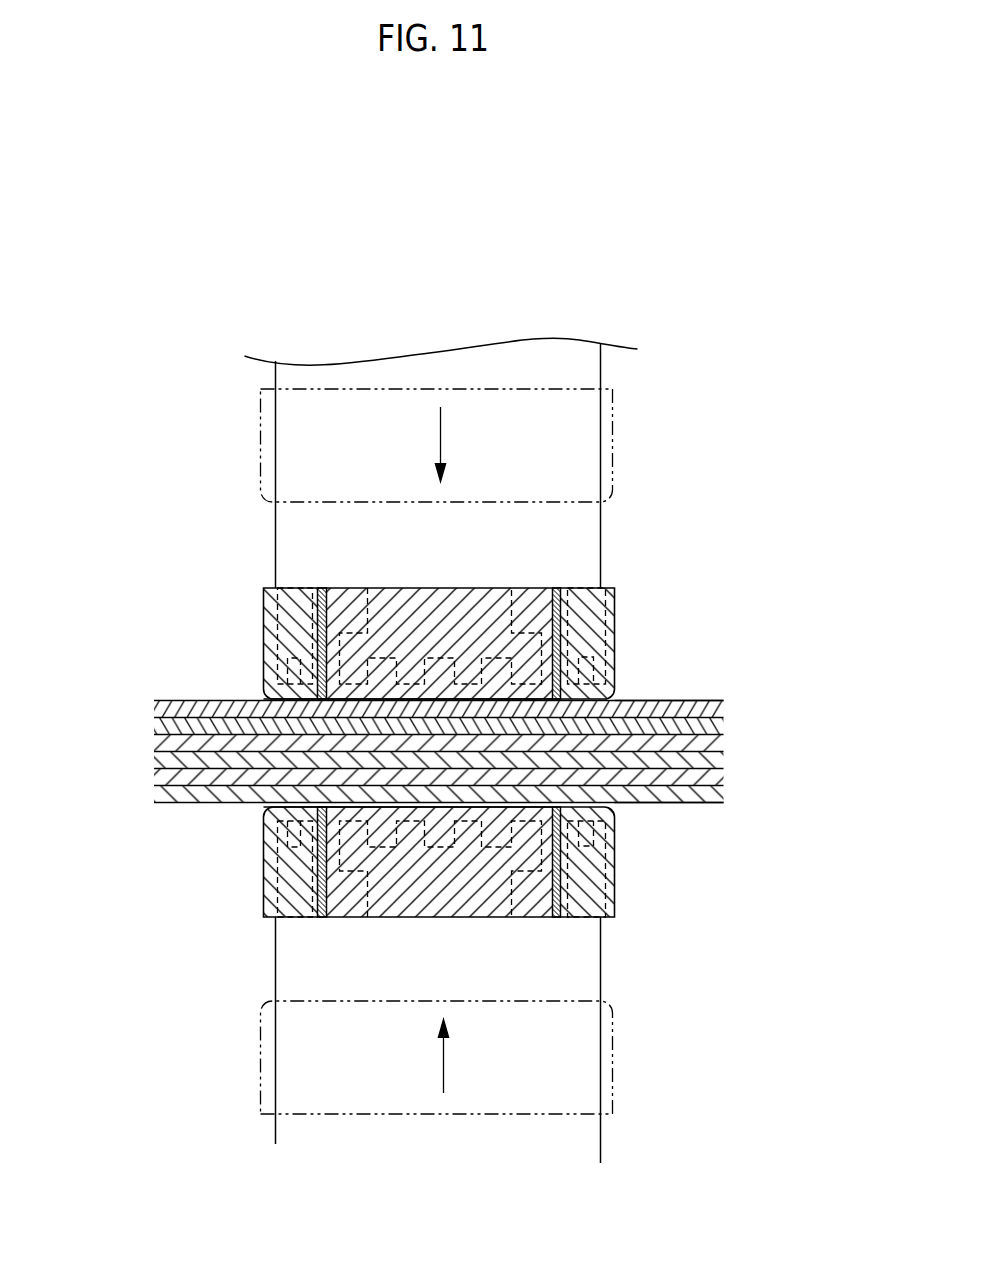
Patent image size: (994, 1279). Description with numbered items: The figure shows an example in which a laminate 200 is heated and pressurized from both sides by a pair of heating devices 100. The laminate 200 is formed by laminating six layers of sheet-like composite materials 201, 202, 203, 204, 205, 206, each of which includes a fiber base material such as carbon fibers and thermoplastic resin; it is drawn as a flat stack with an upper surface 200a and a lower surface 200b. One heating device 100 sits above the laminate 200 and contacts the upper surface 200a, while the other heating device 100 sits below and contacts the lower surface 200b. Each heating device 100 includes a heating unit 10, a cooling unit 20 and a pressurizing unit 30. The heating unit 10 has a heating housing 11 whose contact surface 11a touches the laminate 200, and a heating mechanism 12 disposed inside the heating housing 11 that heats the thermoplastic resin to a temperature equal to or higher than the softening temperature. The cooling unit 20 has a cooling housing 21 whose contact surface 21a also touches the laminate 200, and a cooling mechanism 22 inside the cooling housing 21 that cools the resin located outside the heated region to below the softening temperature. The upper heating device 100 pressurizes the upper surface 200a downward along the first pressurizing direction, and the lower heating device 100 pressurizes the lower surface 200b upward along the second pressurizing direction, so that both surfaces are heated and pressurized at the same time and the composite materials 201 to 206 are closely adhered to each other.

The heating device 100 is at (424, 748).
The heating unit 10 is at (440, 755).
The heating housing 11 is at (458, 603).
The contact surface 11a is at (403, 700).
The heating mechanism 12 is at (540, 632).
The cooling unit 20 is at (270, 602).
The cooling housing 21 is at (295, 597).
The contact surface 21a is at (260, 703).
The cooling mechanism 22 is at (276, 638).
The pressurizing unit 30 is at (588, 530).
The laminate 200 is at (437, 748).
The upper surface 200a is at (704, 699).
The lower surface 200b is at (719, 802).
The composite material 201 is at (720, 702).
The composite material 202 is at (714, 723).
The composite material 203 is at (714, 740).
The composite material 204 is at (158, 758).
The composite material 205 is at (158, 777).
The composite material 206 is at (158, 797).